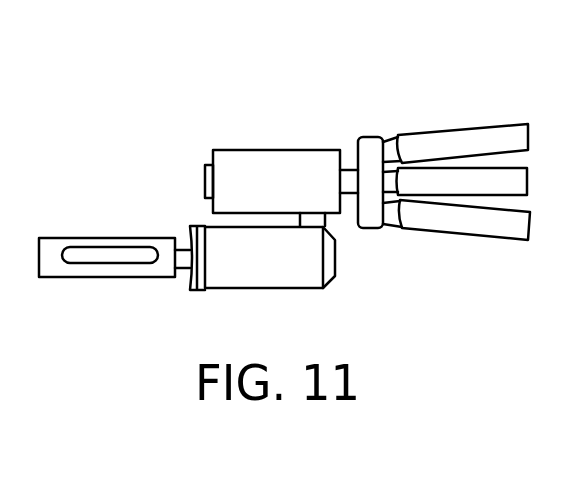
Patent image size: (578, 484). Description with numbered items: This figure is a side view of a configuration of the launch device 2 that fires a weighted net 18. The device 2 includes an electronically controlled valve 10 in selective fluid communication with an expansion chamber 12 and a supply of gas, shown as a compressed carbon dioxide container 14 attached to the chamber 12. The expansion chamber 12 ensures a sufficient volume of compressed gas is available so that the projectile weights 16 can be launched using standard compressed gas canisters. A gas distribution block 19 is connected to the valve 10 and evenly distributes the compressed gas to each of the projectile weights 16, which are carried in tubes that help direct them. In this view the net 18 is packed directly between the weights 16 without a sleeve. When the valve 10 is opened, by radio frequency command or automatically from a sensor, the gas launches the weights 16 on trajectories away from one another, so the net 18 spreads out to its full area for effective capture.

The launch device 2 is at (336, 112).
The electronically controlled valve 10 is at (260, 155).
The expansion chamber 12 is at (315, 255).
The compressed carbon dioxide container 14 is at (73, 268).
The projectile weights 16 is at (463, 184).
The weighted net 18 is at (452, 198).
The gas distribution block 19 is at (373, 148).